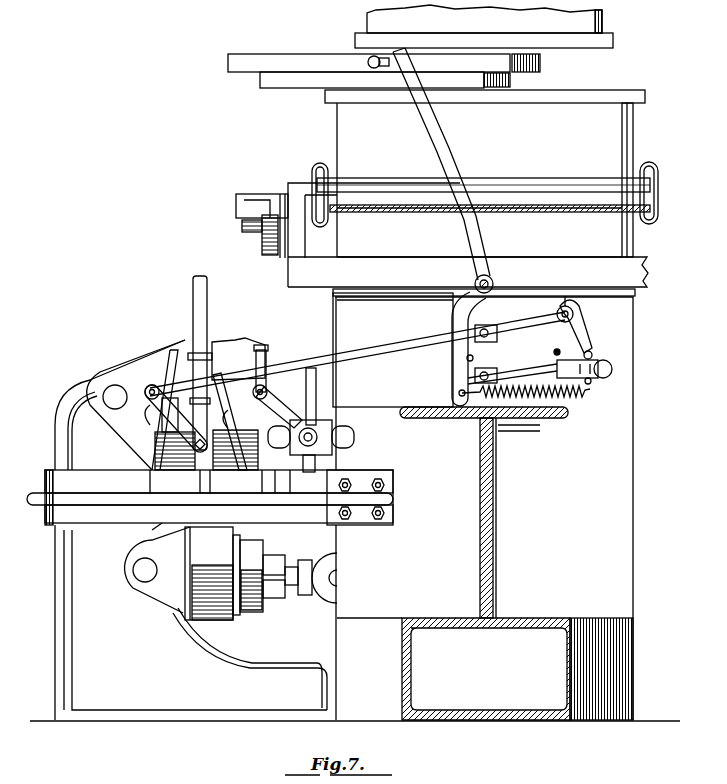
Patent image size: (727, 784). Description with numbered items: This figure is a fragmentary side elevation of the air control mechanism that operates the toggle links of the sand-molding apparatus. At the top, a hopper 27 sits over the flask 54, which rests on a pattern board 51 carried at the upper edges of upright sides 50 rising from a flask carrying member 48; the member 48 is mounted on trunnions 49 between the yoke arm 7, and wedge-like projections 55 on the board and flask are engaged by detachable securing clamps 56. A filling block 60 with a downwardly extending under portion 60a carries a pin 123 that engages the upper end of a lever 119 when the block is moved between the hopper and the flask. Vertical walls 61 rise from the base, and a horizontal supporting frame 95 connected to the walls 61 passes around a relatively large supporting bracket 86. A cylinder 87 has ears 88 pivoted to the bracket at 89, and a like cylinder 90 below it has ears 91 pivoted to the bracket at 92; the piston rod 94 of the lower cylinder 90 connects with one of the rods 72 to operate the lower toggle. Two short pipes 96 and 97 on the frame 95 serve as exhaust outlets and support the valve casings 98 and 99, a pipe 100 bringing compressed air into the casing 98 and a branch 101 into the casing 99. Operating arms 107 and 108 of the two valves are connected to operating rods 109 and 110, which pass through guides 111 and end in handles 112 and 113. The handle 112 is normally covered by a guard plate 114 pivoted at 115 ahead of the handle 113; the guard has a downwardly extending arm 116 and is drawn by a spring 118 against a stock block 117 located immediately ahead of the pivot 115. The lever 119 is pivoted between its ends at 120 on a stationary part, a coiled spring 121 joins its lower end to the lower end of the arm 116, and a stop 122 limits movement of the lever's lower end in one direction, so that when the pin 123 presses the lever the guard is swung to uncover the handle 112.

The hopper 27 is at (603, 26).
The filling block 60 is at (541, 66).
The downwardly extending under portion 60a is at (494, 90).
The pin 123 is at (375, 70).
The lever 119 is at (481, 240).
The flask 54 is at (612, 143).
The pattern board 51 is at (574, 201).
The upright sides 50 is at (617, 238).
The wedge-like projections 55 is at (322, 186).
The securing clamps 56 is at (316, 177).
The flask carrying member 48 is at (371, 273).
The handle 112 is at (567, 297).
The trunnions 49 is at (238, 212).
The arm 7 is at (262, 234).
The vertical walls 61 is at (617, 487).
The operating rod 110 is at (433, 382).
The pivot 120 is at (496, 285).
The stop 122 is at (467, 358).
The coiled spring 121 is at (541, 395).
The guides 111 is at (490, 336).
The operating rod 109 is at (351, 358).
The stock block 117 is at (560, 364).
The spring 118 is at (566, 331).
The guard plate 114 is at (580, 329).
The pivot 115 is at (593, 354).
The handle 113 is at (600, 379).
The arm 116 is at (588, 388).
The supporting bracket 86 is at (72, 422).
The ears 88 is at (144, 368).
The pivotal attachment 89 is at (114, 399).
The operating arm 107 is at (163, 402).
The horizontal supporting frame 95 is at (70, 494).
The pipe 97 is at (318, 466).
The pipe 96 is at (176, 475).
The valve casing 98 is at (224, 473).
The pipe 100 is at (204, 312).
The cylinder 87 is at (220, 348).
The branch 101 is at (259, 362).
The operating arm 108 is at (279, 408).
The valve casing 99 is at (318, 428).
The ears 91 is at (165, 594).
The pivotal connection 92 is at (140, 581).
The cylinder 90 is at (208, 610).
The piston rod 94 is at (290, 589).
The rod 72 is at (340, 579).